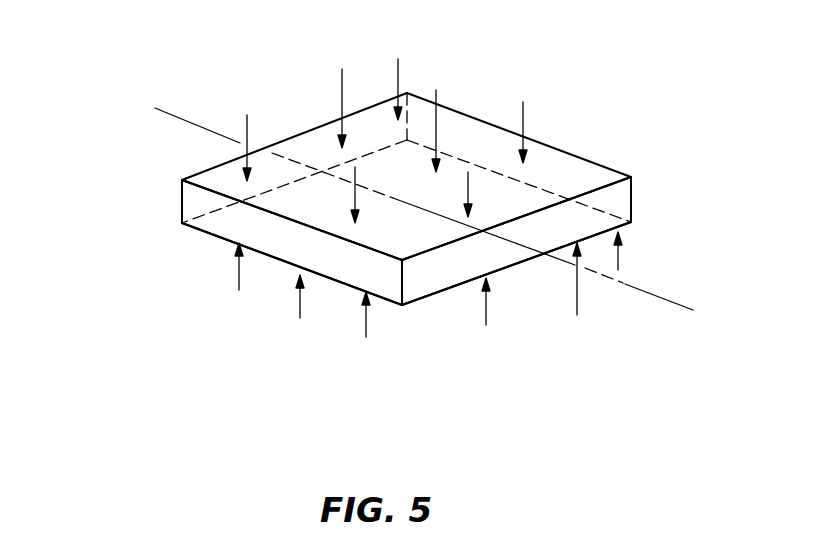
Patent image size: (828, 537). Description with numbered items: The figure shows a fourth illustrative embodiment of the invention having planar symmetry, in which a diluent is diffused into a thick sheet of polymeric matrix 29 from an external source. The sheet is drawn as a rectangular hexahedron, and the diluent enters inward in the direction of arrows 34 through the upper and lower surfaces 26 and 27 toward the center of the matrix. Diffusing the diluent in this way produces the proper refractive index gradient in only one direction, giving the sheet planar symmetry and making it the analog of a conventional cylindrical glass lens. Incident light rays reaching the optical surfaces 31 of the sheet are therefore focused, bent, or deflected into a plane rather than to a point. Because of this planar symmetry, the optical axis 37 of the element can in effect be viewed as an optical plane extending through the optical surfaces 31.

The surface 26 is at (456, 128).
The surface 27 is at (297, 240).
The polymeric matrix 29 is at (199, 212).
The optical surfaces 31 is at (415, 287).
The arrows 34 is at (524, 118).
The optical axis 37 is at (638, 287).